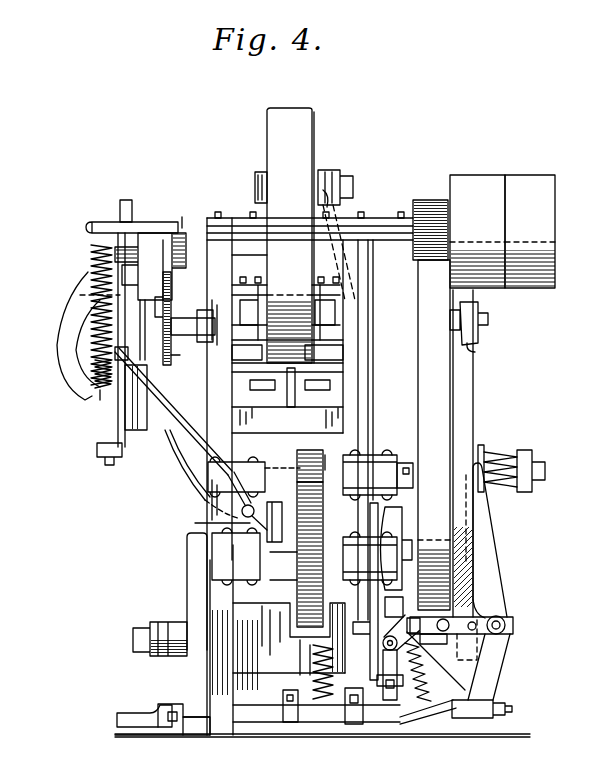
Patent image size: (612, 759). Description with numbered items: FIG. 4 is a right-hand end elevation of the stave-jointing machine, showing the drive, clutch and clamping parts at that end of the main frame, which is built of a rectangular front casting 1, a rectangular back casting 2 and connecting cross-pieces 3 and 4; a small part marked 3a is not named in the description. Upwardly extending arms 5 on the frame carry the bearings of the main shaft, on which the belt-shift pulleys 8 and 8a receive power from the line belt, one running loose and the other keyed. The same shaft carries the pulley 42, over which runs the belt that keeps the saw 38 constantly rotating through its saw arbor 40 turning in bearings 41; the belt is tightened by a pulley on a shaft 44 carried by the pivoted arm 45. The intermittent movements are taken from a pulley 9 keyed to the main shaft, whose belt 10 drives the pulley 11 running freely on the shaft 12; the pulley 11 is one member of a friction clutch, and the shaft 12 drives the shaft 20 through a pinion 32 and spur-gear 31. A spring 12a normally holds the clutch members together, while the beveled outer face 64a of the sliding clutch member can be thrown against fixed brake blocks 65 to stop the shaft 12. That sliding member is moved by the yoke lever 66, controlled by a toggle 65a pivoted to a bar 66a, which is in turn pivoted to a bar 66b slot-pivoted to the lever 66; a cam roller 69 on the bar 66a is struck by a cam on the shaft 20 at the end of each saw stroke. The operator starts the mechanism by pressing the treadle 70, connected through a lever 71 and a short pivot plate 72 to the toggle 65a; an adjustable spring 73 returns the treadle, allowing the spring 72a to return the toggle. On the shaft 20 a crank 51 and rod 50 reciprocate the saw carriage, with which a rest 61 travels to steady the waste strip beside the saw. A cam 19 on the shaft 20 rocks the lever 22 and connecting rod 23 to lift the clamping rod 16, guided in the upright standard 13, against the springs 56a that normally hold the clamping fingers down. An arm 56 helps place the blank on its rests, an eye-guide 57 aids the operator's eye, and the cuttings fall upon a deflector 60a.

The front casting 1 is at (218, 676).
The back casting 2 is at (384, 601).
The cross-piece 3 is at (287, 336).
The housing pin 3a is at (296, 400).
The cross-piece 4 is at (316, 662).
The upwardly extending arms 5 is at (369, 282).
The belt-shift pulley 8 is at (477, 231).
The belt-shift pulley 8a is at (530, 231).
The pulley 9 is at (418, 208).
The belt 10 is at (434, 435).
The pulley 11 is at (418, 408).
The shaft 12 is at (165, 240).
The spring 12a is at (505, 455).
The upright standard 13 is at (125, 410).
The reciprocating rod 16 is at (130, 194).
The cam 19 is at (213, 524).
The shaft 20 is at (283, 538).
The lever 22 is at (198, 455).
The connecting rod 23 is at (95, 366).
The spur-gear 31 is at (310, 588).
The pinion 32 is at (300, 454).
The saw 38 is at (183, 360).
The saw arbor 40 is at (187, 318).
The bearings 41 is at (258, 290).
The pulley 42 is at (313, 118).
The shaft 44 is at (257, 188).
The pivoted arm 45 is at (370, 290).
The rod 50 is at (173, 630).
The crank 51 is at (190, 550).
The arm 56 is at (68, 323).
The springs 56a is at (92, 256).
The eye-guide 57 is at (176, 262).
The deflector 60a is at (200, 475).
The rest 61 is at (172, 290).
The outer face 64a is at (472, 352).
The brake blocks 65 is at (478, 334).
The toggle 65a is at (428, 644).
The yoke lever 66 is at (490, 591).
The bar 66a is at (506, 625).
The bar 66b is at (510, 634).
The cam roller 69 is at (475, 569).
The treadle 70 is at (130, 720).
The lever 71 is at (190, 712).
The short pivot plate 72 is at (405, 712).
The spring 72a is at (420, 676).
The adjustable spring 73 is at (320, 707).